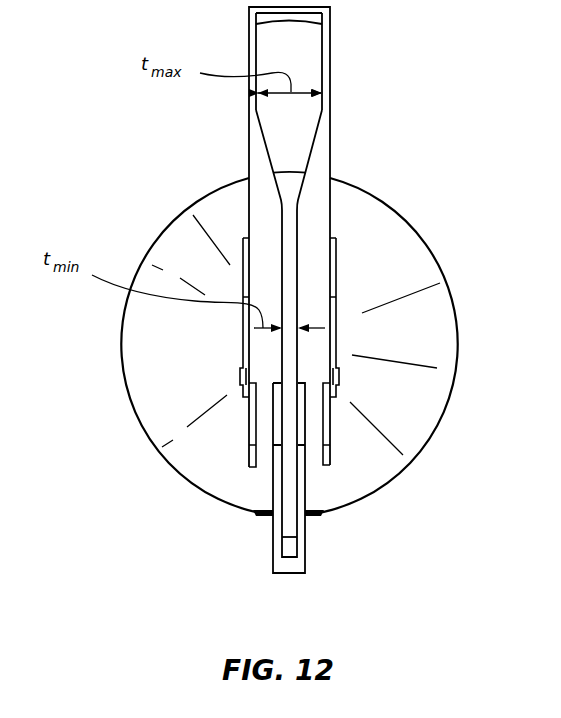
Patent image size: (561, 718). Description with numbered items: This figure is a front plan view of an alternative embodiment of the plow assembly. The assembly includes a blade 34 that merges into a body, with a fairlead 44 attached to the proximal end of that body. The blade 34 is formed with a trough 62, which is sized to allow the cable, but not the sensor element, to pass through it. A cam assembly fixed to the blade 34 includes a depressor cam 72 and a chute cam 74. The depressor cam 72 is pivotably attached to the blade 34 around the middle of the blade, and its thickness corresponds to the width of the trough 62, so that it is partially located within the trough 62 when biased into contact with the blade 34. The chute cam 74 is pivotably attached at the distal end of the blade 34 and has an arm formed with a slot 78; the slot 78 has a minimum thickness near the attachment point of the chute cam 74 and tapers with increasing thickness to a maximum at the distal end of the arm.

The blade 34 is at (291, 573).
The fairlead 44 is at (398, 208).
The trough 62 is at (290, 546).
The depressor cam 72 is at (290, 442).
The chute cam 74 is at (332, 42).
The slot 78 is at (287, 122).